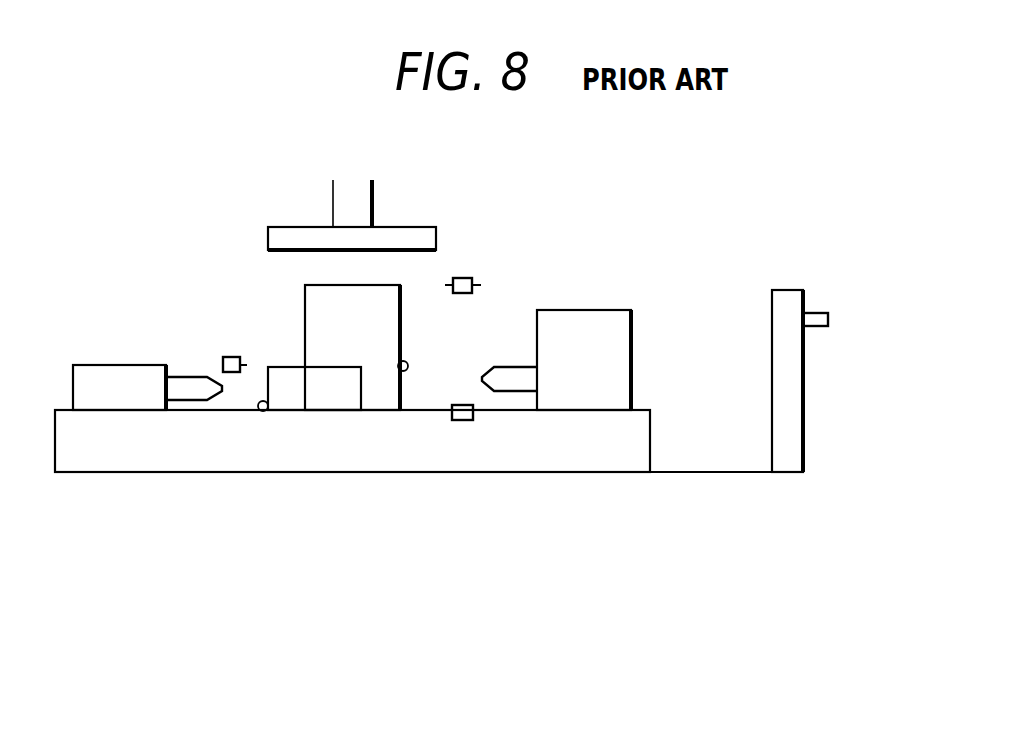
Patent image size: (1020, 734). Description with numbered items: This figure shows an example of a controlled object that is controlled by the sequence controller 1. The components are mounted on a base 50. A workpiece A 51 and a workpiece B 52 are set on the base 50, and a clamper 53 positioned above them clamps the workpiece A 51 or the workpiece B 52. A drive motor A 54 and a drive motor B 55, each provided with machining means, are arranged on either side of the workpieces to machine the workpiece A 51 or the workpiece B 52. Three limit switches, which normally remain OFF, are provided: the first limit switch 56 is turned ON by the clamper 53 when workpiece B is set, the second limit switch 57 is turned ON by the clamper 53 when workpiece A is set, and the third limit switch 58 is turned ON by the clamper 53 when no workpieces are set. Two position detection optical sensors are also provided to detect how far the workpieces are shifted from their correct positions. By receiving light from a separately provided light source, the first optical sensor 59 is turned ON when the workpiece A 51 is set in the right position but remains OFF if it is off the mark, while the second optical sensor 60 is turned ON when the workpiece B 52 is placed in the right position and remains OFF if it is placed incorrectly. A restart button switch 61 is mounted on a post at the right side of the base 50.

The sequence controller 1 is at (413, 484).
The base 50 is at (377, 438).
The workpiece A 51 is at (356, 501).
The workpiece B 52 is at (402, 439).
The clamper 53 is at (389, 197).
The drive motor A 54 is at (138, 353).
The drive motor B 55 is at (603, 327).
The limit switch LS1 56 is at (550, 253).
The limit switch LS2 57 is at (175, 316).
The limit switch LS3 58 is at (474, 383).
The position detection optical sensor L1 59 is at (388, 539).
The position detection optical sensor L2 60 is at (402, 372).
The restart button switch 61 is at (823, 328).